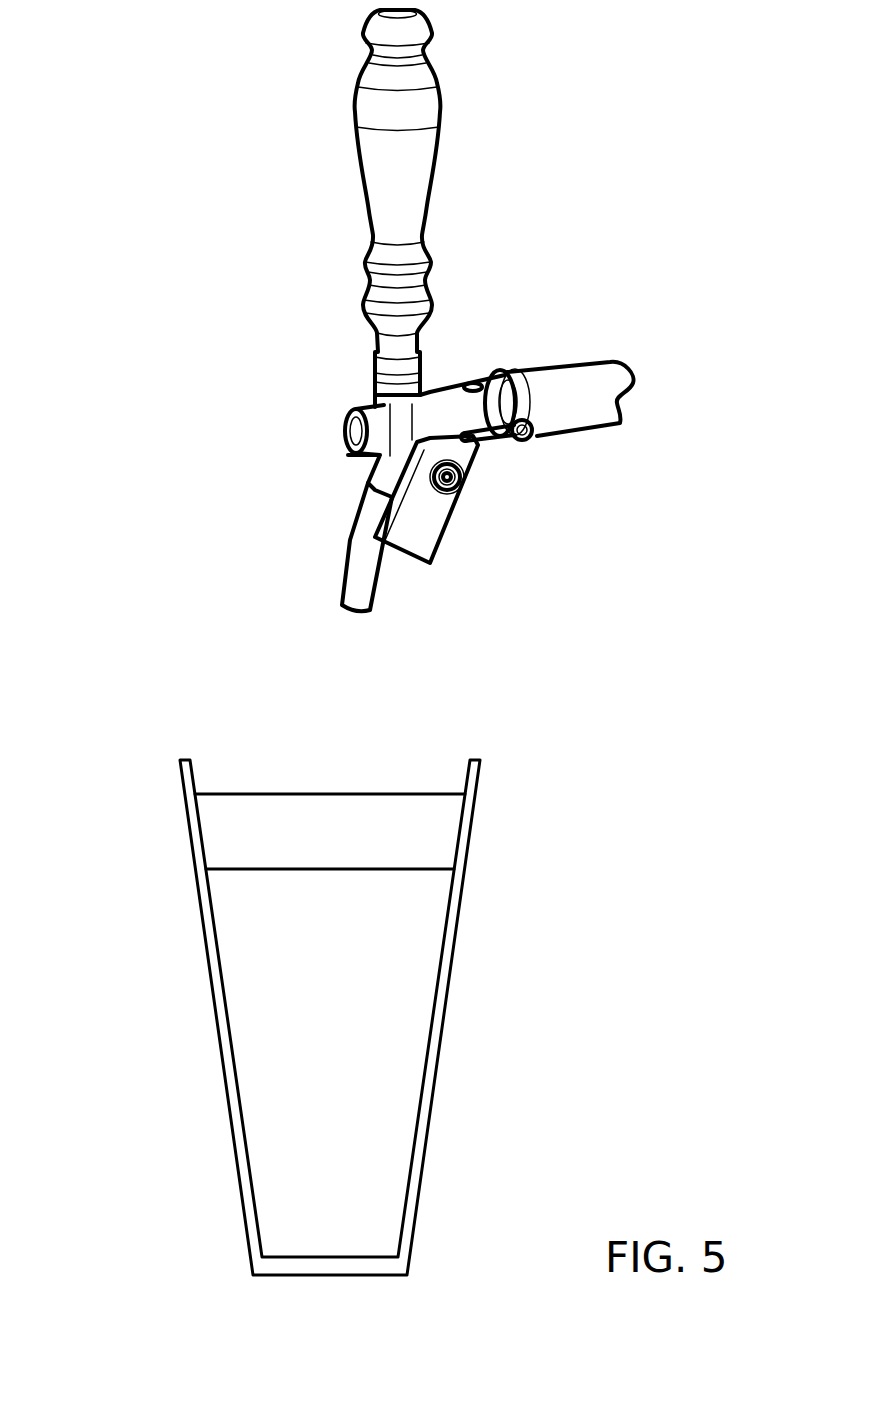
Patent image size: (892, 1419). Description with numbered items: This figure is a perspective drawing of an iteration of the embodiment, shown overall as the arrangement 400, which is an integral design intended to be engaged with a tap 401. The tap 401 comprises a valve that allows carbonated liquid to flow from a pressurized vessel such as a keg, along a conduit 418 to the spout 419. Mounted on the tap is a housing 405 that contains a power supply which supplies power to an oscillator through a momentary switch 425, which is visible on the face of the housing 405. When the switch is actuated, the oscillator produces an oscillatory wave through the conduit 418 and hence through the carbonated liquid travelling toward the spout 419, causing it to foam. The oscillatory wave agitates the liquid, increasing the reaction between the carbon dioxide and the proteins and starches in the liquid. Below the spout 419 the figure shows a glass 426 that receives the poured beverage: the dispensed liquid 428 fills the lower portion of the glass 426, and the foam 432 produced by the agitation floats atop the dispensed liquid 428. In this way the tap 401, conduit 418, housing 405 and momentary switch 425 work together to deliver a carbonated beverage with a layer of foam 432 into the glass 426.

The beverage dispensing system 400 is at (137, 54).
The tap 401 is at (492, 198).
The housing 405 is at (428, 520).
The conduit 418 is at (357, 580).
The spout 419 is at (340, 641).
The momentary switch 425 is at (455, 476).
The glass 426 is at (223, 1066).
The dispensed liquid 428 is at (253, 938).
The foam 432 is at (310, 828).